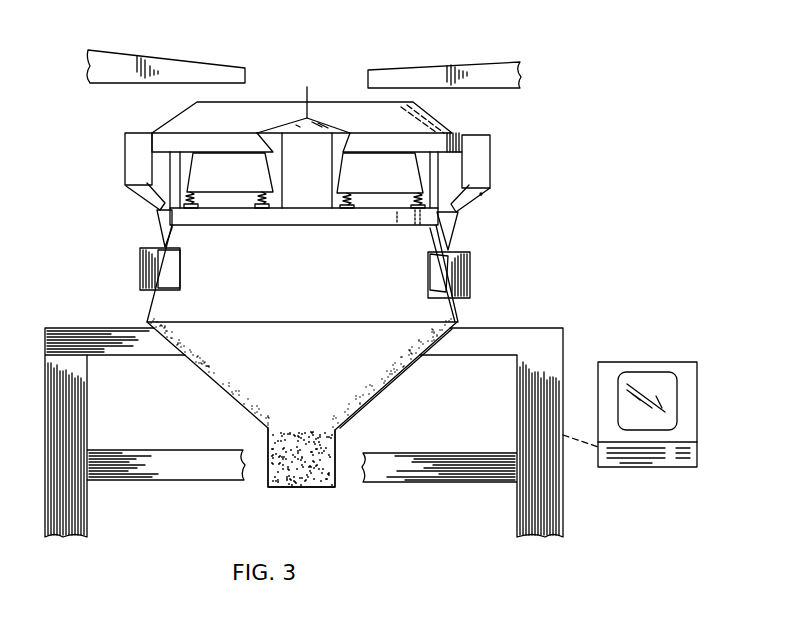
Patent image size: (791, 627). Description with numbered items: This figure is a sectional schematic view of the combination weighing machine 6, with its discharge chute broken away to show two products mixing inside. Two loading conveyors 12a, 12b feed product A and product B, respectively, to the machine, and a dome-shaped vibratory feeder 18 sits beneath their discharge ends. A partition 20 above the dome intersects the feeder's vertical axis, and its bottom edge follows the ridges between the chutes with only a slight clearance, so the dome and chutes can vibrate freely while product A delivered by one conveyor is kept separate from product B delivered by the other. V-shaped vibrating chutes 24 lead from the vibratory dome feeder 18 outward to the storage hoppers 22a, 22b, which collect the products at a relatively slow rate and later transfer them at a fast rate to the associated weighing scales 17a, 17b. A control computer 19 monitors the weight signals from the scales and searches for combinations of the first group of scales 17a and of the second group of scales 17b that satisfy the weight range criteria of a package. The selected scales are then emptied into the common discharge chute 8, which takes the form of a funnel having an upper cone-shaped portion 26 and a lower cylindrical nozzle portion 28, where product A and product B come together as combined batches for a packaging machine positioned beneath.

The loading conveyor 12a is at (188, 58).
The loading conveyor 12b is at (427, 65).
The partition 20 is at (309, 95).
The dome-shaped vibratory feeder 18 is at (332, 128).
The vibrating chute 24 is at (428, 120).
The storage hopper 22a is at (138, 158).
The storage hopper 22b is at (478, 162).
The weighing scale 17a is at (163, 225).
The weighing scale 17b is at (448, 227).
The combination weighing machine 6 is at (531, 251).
The common discharge chute 8 is at (402, 407).
The product A is at (226, 374).
The product B is at (378, 382).
The upper cone-shaped portion 26 is at (360, 410).
The lower cylindrical nozzle portion 28 is at (336, 473).
The control computer 19 is at (628, 368).